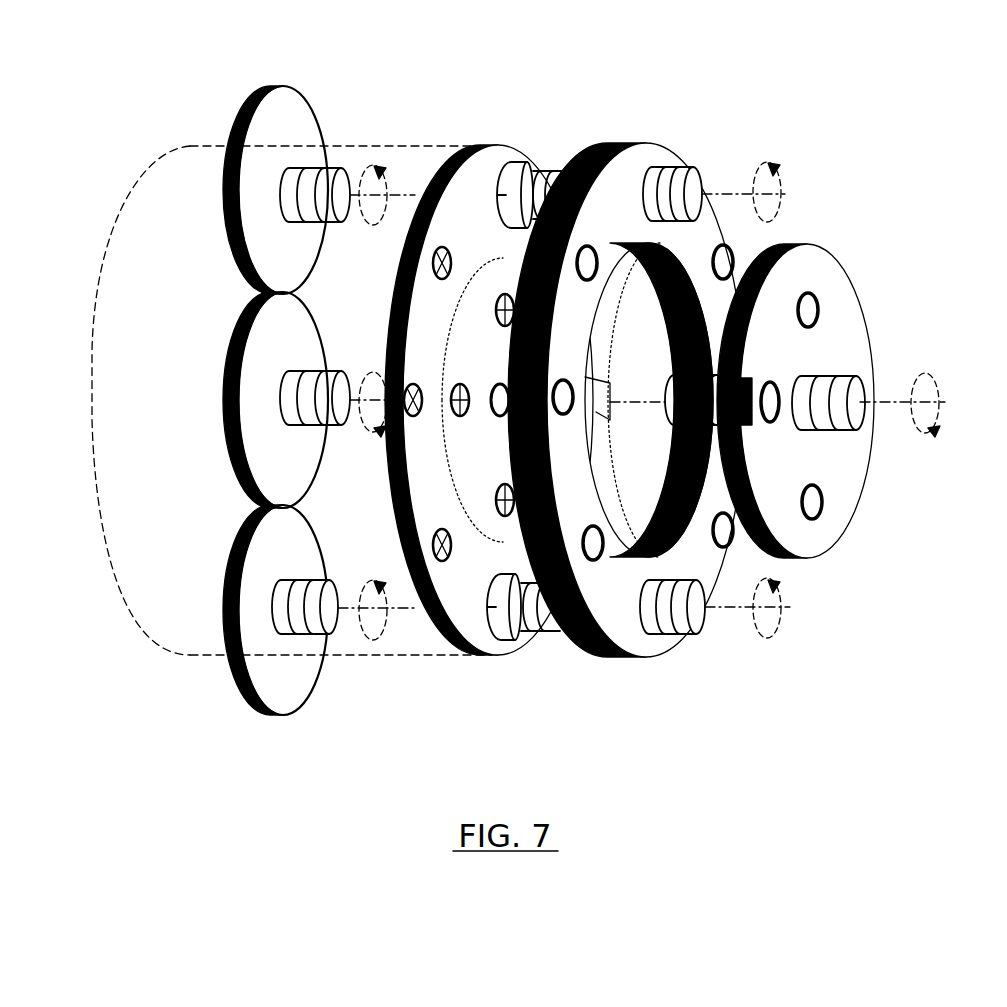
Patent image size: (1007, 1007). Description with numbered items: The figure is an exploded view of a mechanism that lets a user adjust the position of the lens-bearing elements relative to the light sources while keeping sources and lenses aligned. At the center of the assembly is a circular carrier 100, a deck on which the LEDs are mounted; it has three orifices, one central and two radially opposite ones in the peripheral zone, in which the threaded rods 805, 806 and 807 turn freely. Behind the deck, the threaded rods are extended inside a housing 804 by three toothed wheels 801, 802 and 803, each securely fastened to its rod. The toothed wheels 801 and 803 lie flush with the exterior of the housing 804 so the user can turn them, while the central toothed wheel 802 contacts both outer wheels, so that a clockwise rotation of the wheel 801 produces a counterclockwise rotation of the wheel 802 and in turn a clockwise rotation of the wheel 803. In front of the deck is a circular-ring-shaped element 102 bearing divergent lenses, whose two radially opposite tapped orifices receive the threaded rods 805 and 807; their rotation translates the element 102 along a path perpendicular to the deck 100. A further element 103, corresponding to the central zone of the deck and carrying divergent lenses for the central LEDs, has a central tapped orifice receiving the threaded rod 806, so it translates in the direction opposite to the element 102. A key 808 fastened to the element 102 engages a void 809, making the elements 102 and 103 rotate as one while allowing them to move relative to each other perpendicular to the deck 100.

The circular carrier 100 is at (518, 150).
The circular-ring-shaped element 102 is at (700, 150).
The element 103 is at (840, 263).
The toothed wheel 801 is at (318, 120).
The central toothed wheel 802 is at (227, 397).
The toothed wheel 803 is at (243, 523).
The housing 804 is at (186, 147).
The threaded rod 805 is at (340, 168).
The threaded rod 806 is at (313, 423).
The threaded rod 807 is at (325, 630).
The key 808 is at (600, 423).
The void 809 is at (756, 432).